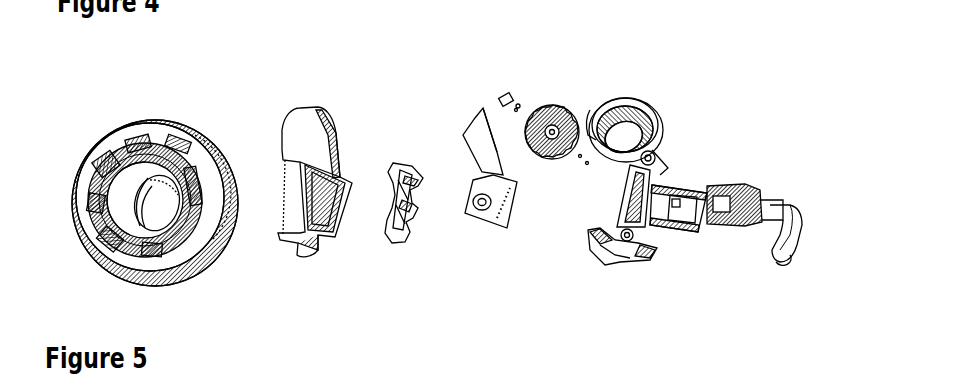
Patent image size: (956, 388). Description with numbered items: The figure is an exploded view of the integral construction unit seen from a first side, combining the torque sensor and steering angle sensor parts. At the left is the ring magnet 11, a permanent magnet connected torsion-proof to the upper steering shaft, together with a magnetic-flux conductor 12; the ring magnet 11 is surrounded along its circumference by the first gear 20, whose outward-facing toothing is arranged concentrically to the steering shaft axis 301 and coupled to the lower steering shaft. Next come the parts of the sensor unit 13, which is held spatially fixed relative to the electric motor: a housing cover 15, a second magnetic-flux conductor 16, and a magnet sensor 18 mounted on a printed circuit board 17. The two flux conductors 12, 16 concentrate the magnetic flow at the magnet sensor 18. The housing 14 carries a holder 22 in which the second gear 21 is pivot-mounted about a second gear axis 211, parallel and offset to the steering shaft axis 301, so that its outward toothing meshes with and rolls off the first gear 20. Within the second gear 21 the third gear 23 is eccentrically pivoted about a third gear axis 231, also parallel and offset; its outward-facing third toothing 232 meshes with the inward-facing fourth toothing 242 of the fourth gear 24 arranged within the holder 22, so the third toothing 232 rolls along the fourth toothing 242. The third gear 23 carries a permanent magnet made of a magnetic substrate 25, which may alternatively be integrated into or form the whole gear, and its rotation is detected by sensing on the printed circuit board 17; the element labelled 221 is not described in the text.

The steering shaft axis 301 is at (83, 150).
The ring magnet 11 is at (150, 143).
The magnetic-flux conductor 12 is at (227, 168).
The first gear 20 is at (188, 252).
The housing cover 15 is at (302, 122).
The magnetic-flux conductor 16 is at (380, 227).
The printed circuit board 17 is at (485, 107).
The magnet sensor 18 is at (478, 228).
The sensor unit 13 is at (500, 277).
The third gear axis 231 is at (517, 108).
The second gear axis 211 is at (510, 104).
The magnetic substrate 25 is at (552, 106).
The gear teeth 221 is at (565, 108).
The second gear 21 is at (570, 110).
The third gear 23 is at (566, 115).
The third toothing 232 is at (564, 158).
The housing 14 is at (630, 98).
The holder 22 is at (665, 154).
The fourth toothing 242 is at (657, 110).
The fourth gear 24 is at (660, 133).